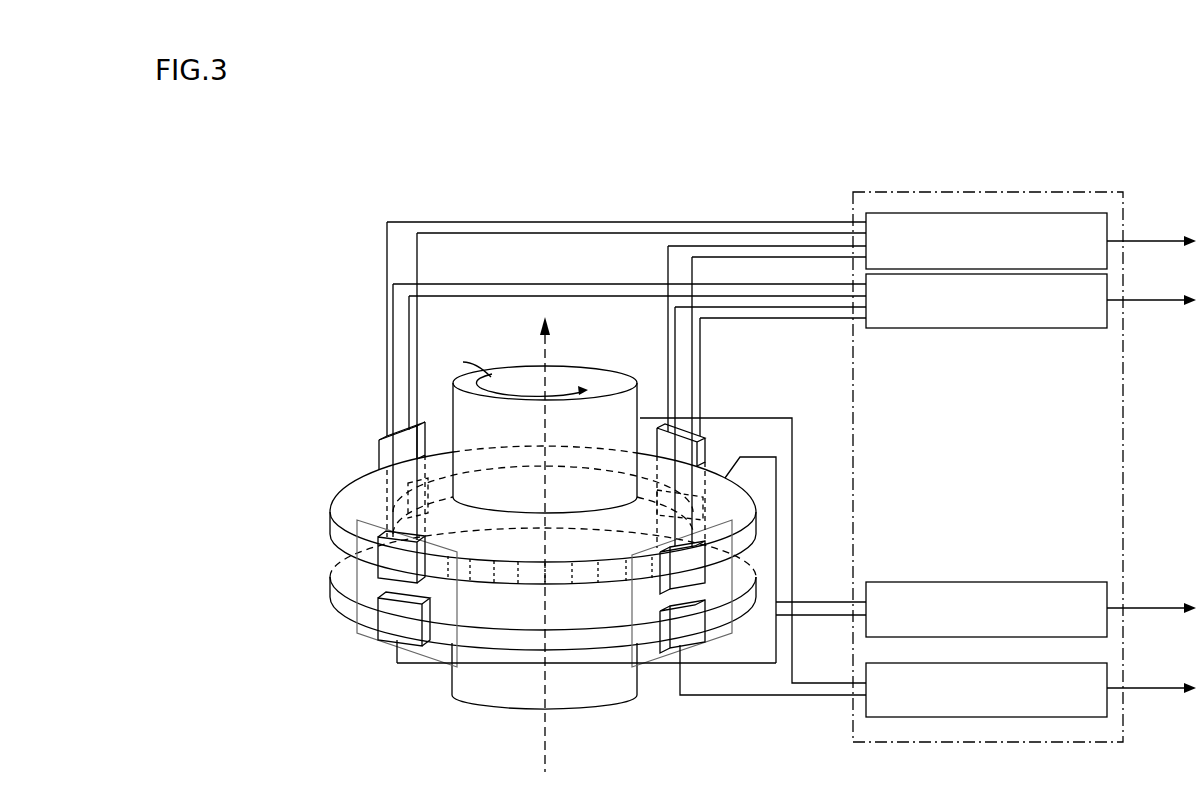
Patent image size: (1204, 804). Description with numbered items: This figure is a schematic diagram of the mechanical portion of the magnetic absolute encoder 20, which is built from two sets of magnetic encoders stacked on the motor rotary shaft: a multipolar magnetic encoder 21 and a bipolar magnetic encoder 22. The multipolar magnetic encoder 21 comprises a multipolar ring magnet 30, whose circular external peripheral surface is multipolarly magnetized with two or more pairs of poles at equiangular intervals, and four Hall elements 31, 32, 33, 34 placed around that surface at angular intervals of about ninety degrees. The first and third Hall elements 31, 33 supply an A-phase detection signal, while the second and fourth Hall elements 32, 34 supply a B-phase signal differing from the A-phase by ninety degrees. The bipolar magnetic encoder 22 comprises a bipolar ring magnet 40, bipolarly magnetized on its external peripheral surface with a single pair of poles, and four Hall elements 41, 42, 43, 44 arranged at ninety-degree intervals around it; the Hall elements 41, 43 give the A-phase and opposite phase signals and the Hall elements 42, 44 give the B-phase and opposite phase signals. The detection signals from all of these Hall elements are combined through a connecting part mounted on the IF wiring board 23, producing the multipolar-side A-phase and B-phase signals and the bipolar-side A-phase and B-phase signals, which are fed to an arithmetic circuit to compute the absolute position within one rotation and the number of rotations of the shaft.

The magnetic absolute encoder 20 is at (543, 184).
The multipolar magnetic encoder 21 is at (306, 470).
The bipolar magnetic encoder 22 is at (310, 600).
The IF wiring board 23 is at (1012, 192).
The multipolar ring magnet 30 is at (368, 462).
The Hall element (M1) 31 is at (703, 437).
The Hall element (M3) 32 is at (700, 560).
The Hall element (M2) 33 is at (382, 570).
The Hall element (M4) 34 is at (378, 452).
The bipolar ring magnet 40 is at (333, 579).
The Hall element (T1) 41 is at (705, 497).
The Hall element (T2) 42 is at (680, 645).
The Hall element (T3) 43 is at (408, 640).
The Hall element (T4) 44 is at (338, 507).